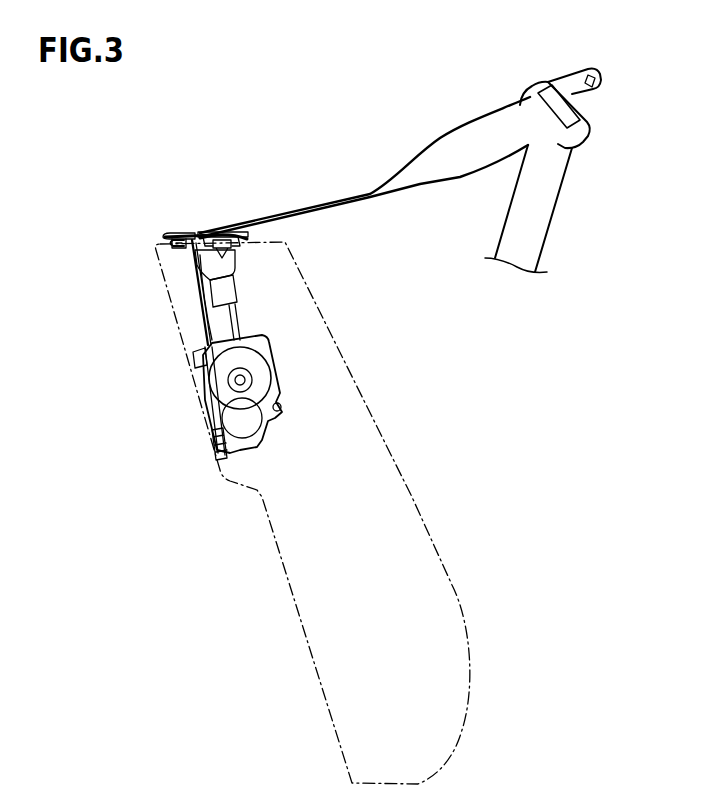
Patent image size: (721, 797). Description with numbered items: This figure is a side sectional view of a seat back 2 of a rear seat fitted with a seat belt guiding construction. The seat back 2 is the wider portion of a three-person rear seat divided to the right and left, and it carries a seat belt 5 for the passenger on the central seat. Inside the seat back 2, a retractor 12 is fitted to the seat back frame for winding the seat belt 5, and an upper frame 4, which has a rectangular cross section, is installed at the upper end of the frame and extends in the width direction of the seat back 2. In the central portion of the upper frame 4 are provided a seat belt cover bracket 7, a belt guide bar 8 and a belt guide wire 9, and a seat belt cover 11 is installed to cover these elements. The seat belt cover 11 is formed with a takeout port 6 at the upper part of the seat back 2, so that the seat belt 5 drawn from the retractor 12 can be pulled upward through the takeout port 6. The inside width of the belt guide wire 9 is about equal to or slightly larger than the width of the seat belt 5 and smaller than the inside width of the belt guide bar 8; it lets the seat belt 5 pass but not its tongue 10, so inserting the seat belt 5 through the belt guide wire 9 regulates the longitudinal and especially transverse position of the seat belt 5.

The seat back 2 is at (413, 497).
The upper frame 4 is at (237, 296).
The seat belt 5 is at (468, 170).
The takeout port 6 is at (212, 211).
The seat belt cover bracket 7 is at (215, 244).
The belt guide bar 8 is at (210, 300).
The belt guide wire 9 is at (190, 247).
The tongue 10 is at (558, 65).
The seat belt cover 11 is at (175, 230).
The retractor 12 is at (272, 382).